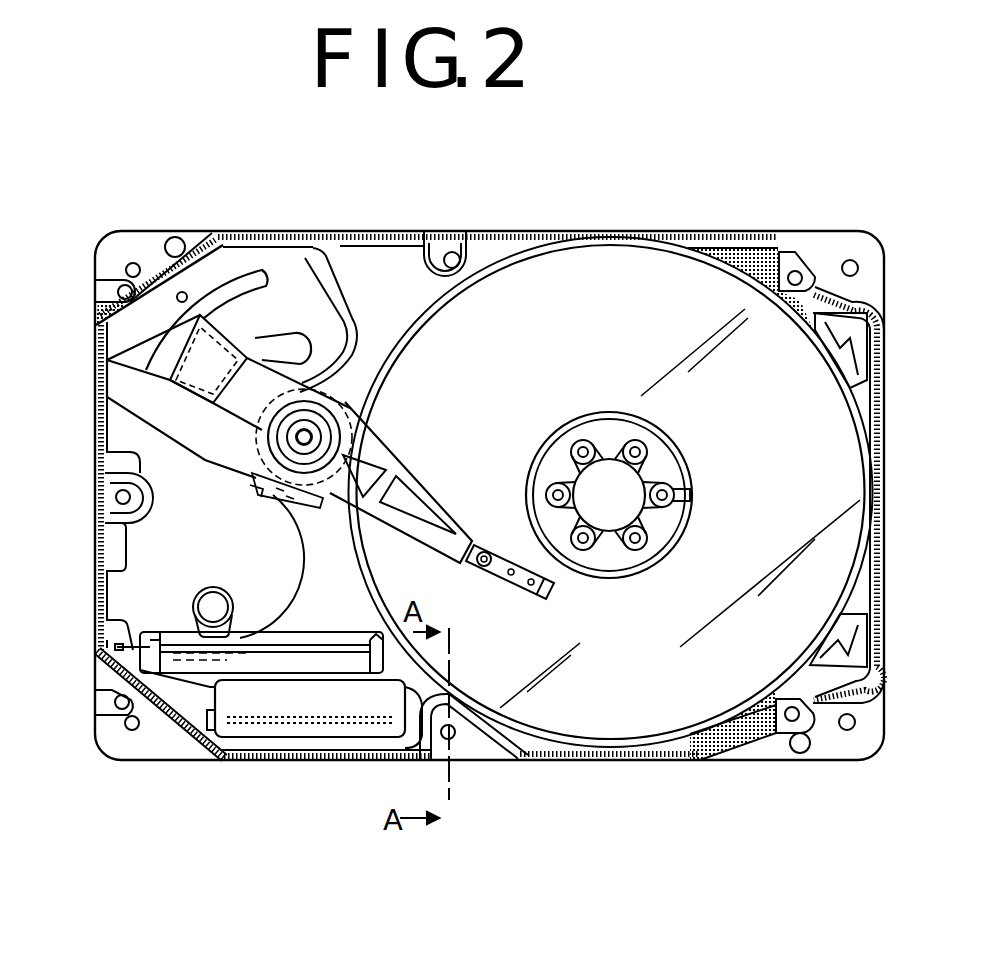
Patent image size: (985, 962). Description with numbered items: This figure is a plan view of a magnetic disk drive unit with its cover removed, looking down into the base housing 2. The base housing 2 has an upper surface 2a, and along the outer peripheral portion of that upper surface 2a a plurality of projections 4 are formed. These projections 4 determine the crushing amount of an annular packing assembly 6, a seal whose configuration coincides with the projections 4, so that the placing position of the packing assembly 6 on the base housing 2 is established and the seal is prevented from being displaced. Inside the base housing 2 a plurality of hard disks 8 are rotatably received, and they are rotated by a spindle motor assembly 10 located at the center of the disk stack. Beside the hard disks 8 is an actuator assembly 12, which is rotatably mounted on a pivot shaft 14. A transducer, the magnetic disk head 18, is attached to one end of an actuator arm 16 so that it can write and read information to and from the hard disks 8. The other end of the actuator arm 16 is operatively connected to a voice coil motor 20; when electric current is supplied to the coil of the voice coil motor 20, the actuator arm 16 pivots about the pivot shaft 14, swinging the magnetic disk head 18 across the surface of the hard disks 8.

The base housing 2 is at (855, 232).
The upper surface 2a is at (125, 233).
The projections 4 is at (453, 238).
The annular packing assembly 6 is at (728, 243).
The hard disks 8 is at (848, 447).
The spindle motor assembly 10 is at (609, 438).
The actuator assembly 12 is at (352, 398).
The pivot shaft 14 is at (288, 438).
The actuator arm 16 is at (362, 438).
The magnetic disk head 18 is at (557, 597).
The voice coil motor 20 is at (253, 337).